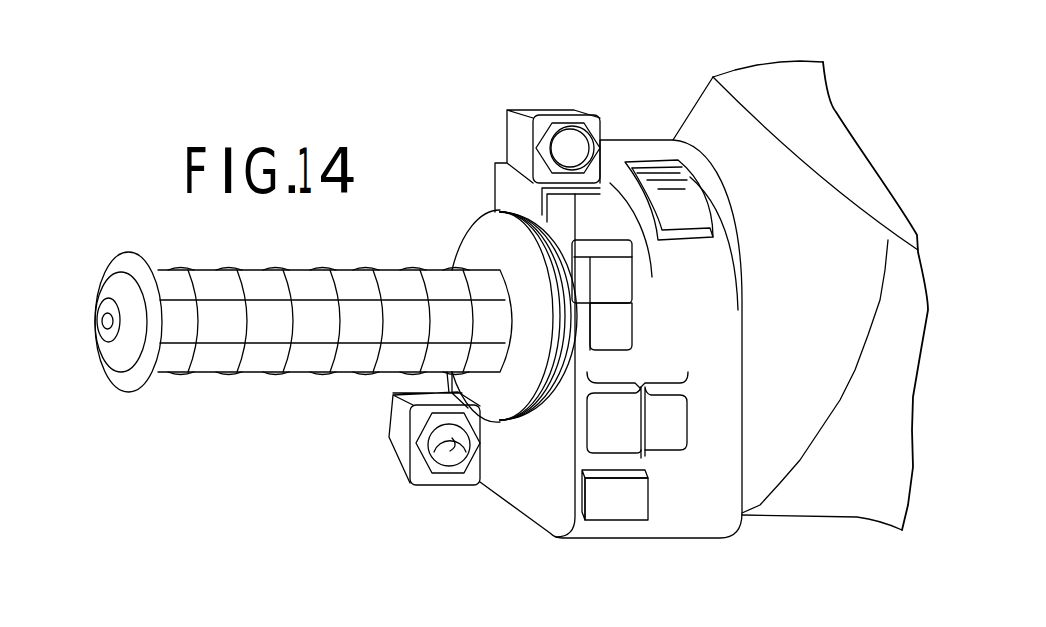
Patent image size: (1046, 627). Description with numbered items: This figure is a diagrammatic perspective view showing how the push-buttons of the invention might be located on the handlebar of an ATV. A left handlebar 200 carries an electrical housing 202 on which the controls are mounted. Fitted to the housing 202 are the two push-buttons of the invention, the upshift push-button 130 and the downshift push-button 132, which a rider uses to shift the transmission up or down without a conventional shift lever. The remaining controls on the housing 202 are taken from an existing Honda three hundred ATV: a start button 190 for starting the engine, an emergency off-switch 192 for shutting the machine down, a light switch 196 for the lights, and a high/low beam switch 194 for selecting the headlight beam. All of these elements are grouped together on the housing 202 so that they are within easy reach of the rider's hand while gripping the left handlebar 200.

The upshift push-button 130 is at (563, 143).
The downshift push-button 132 is at (453, 458).
The start button 190 is at (605, 512).
The emergency off-switch 192 is at (627, 430).
The high/low beam switch 194 is at (617, 313).
The light switch 196 is at (683, 213).
The left handlebar 200 is at (300, 288).
The electrical housing 202 is at (620, 150).